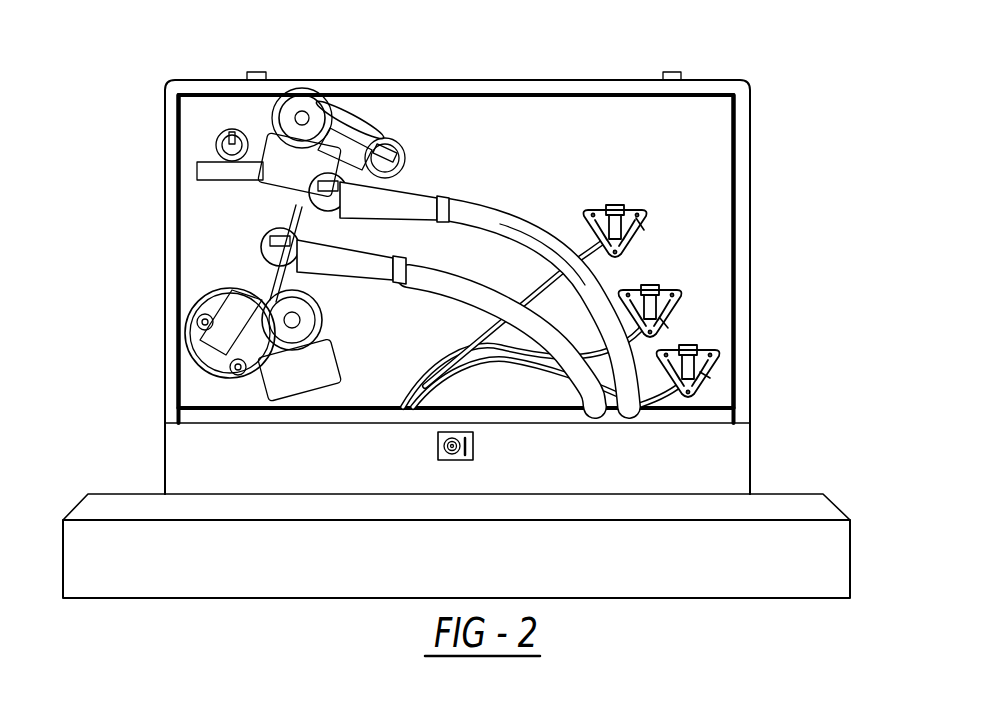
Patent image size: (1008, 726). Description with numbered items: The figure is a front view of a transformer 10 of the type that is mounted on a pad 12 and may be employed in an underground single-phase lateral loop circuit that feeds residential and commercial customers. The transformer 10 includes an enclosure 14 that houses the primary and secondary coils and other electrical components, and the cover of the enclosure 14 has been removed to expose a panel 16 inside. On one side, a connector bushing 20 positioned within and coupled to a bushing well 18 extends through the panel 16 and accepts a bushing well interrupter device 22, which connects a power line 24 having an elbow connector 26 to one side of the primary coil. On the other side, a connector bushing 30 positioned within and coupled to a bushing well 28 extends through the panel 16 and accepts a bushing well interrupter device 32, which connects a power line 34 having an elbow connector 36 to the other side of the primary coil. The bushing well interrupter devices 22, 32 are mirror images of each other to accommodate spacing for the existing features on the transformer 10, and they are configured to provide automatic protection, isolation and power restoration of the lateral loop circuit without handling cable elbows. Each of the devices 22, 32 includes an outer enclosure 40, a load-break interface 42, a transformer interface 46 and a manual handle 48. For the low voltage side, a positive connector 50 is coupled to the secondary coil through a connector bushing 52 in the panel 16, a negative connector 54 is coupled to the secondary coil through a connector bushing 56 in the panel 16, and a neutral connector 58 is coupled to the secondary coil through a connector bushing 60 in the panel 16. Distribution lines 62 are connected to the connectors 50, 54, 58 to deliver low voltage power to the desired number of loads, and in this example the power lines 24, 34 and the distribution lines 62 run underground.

The transformer 10 is at (738, 62).
The pad 12 is at (748, 570).
The enclosure 14 is at (176, 96).
The panel 16 is at (504, 118).
The bushing well 18 is at (203, 343).
The connector bushing 20 is at (198, 320).
The bushing well interrupter device 22 is at (213, 244).
The power line 24 is at (548, 336).
The elbow connector 26 is at (385, 322).
The bushing well 28 is at (430, 242).
The connector bushing 30 is at (398, 163).
The bushing well interrupter device 32 is at (358, 103).
The power line 34 is at (541, 236).
The elbow connector 36 is at (400, 174).
The outer enclosure 40 is at (288, 174).
The load-break interface 42 is at (290, 263).
The transformer interface 46 is at (388, 157).
The manual handle 48 is at (365, 127).
The 120 V positive connector 50 is at (615, 206).
The connector bushing 52 is at (645, 226).
The 120 V negative connector 54 is at (660, 292).
The connector bushing 56 is at (668, 326).
The neutral connector 58 is at (690, 350).
The connector bushing 60 is at (710, 374).
The distribution lines 62 is at (425, 386).